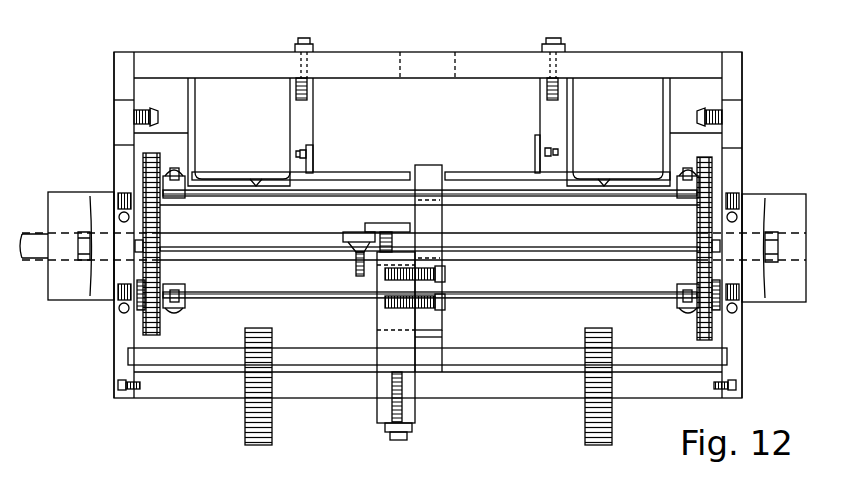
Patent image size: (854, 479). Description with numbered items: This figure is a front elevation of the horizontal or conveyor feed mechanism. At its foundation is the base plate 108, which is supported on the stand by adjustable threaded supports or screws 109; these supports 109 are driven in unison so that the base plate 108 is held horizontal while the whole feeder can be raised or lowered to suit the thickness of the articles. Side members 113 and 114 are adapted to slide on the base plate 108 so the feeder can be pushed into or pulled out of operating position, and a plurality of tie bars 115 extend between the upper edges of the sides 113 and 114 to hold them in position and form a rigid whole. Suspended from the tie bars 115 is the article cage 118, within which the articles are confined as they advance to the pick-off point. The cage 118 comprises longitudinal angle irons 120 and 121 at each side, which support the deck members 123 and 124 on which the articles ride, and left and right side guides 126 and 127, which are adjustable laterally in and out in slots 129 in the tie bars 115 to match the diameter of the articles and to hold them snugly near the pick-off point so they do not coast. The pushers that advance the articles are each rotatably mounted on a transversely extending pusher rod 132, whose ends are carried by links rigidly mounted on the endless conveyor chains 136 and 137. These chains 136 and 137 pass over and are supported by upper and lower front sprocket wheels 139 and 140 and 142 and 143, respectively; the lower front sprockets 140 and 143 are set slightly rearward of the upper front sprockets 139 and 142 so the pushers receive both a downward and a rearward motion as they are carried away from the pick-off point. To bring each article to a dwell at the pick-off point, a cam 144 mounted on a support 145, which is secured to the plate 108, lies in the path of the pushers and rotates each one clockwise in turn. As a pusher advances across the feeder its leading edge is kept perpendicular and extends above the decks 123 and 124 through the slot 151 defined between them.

The base plate 108 is at (128, 353).
The adjustable threaded supports 109 is at (245, 410).
The side member 113 is at (730, 175).
The side member 114 is at (122, 158).
The tie bars 115 is at (425, 62).
The article cage 118 is at (478, 97).
The angle iron 120 is at (190, 112).
The angle iron 121 is at (662, 112).
The deck member 123 is at (358, 172).
The deck member 124 is at (578, 176).
The left side guide 126 is at (562, 112).
The right side guide 127 is at (305, 120).
The slots 129 is at (345, 60).
The pusher rod 132 is at (302, 192).
The conveyor chain 136 is at (697, 326).
The conveyor chain 137 is at (160, 338).
The upper front sprocket wheel 139 is at (716, 165).
The lower front sprocket wheel 140 is at (713, 322).
The upper front sprocket wheel 142 is at (165, 168).
The lower front sprocket wheel 143 is at (163, 292).
The cam 144 is at (428, 168).
The support 145 is at (378, 405).
The slot 151 is at (448, 168).